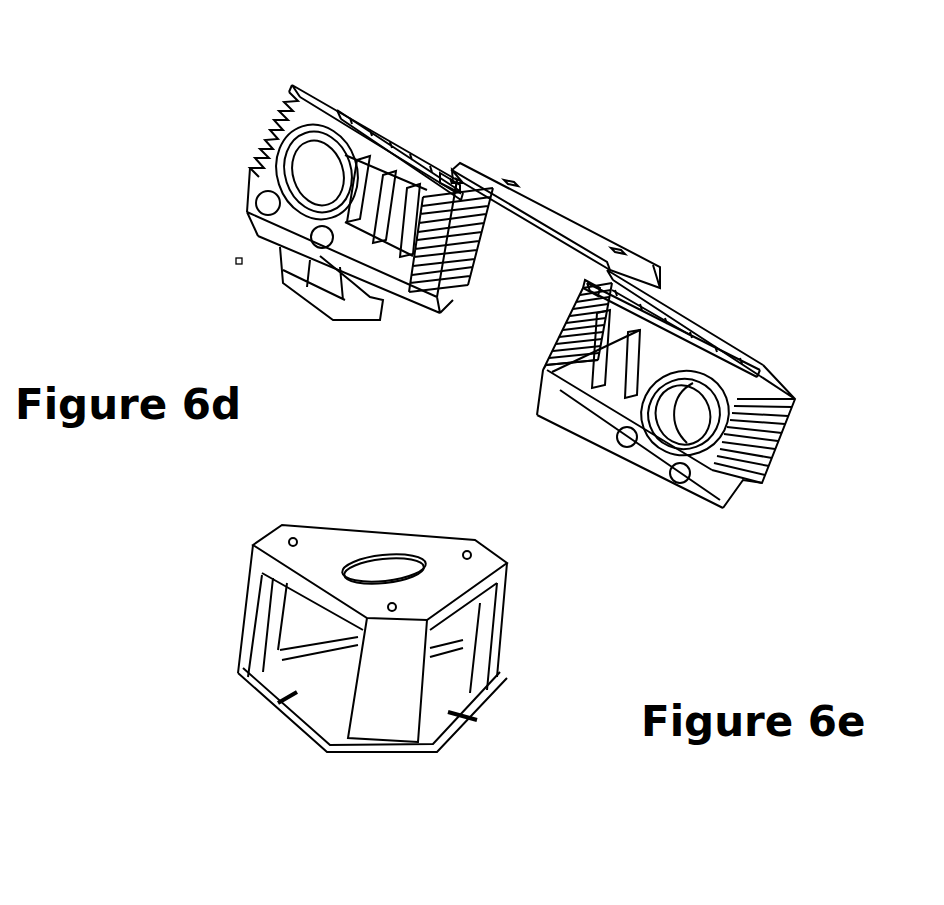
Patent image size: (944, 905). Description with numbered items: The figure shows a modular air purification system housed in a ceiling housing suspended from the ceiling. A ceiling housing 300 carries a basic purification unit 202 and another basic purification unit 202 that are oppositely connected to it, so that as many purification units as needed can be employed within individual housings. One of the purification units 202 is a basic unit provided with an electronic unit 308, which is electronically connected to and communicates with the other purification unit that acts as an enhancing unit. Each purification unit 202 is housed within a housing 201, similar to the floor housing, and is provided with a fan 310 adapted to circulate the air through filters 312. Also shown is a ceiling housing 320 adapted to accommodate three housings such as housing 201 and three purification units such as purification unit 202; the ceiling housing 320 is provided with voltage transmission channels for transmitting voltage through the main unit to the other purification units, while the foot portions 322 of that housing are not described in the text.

In FIG. 6D, the housing 201 is at (388, 122).
In FIG. 6D, the basic purification unit 202 is at (333, 93).
In FIG. 6D, the ceiling housing 300 is at (546, 244).
In FIG. 6D, the electronic unit 308 is at (288, 287).
In FIG. 6D, the fan 310 is at (293, 163).
In FIG. 6D, the filters 312 is at (447, 182).
In FIG. 6E, the ceiling housing 320 is at (340, 540).
In FIG. 6E, the foot tab 322 is at (273, 710).